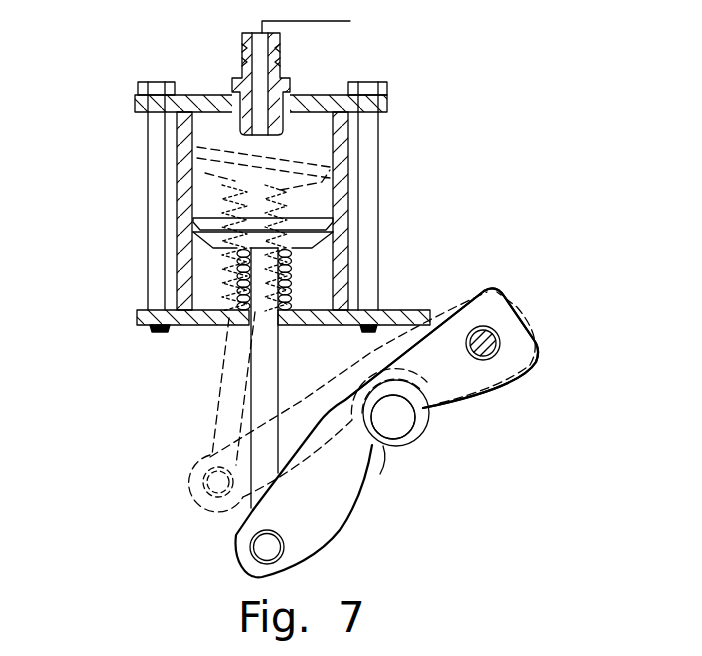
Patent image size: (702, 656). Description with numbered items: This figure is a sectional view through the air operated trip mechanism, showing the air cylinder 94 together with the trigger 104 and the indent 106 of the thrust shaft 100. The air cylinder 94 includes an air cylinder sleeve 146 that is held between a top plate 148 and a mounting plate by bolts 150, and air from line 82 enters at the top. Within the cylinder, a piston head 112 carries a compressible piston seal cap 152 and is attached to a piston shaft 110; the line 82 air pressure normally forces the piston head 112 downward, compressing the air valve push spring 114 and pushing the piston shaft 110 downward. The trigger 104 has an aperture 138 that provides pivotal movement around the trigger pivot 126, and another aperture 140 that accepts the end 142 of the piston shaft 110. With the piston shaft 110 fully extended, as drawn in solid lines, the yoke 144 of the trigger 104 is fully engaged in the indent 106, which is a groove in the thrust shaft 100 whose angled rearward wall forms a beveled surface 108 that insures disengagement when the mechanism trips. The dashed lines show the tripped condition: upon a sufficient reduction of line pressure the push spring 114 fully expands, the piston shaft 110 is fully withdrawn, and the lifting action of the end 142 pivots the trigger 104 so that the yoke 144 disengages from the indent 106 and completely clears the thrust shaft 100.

The line 82 is at (350, 21).
The air cylinder 94 is at (120, 135).
The thrust shaft 100 is at (394, 438).
The trigger 104 is at (327, 517).
The indent 106 is at (380, 474).
The beveled surface 108 is at (425, 432).
The piston shaft 110 is at (280, 342).
The piston head 112 is at (217, 245).
The air valve push spring 114 is at (215, 278).
The trigger pivot 126 is at (497, 335).
The aperture 138 is at (500, 352).
The aperture 140 is at (234, 563).
The end 142 is at (286, 558).
The yoke 144 is at (393, 395).
The air cylinder sleeve 146 is at (350, 172).
The top plate 148 is at (340, 92).
The bolts 150 is at (148, 187).
The compressible piston seal cap 152 is at (322, 212).